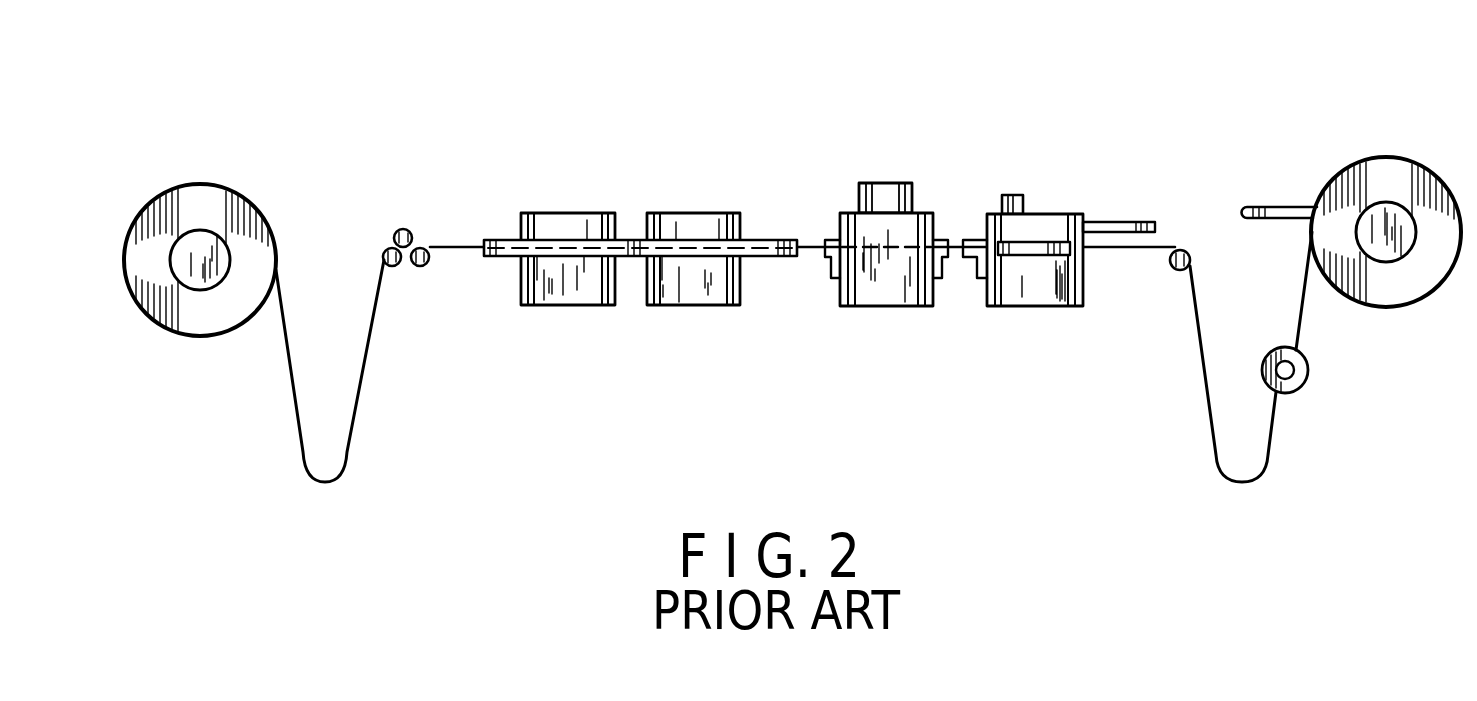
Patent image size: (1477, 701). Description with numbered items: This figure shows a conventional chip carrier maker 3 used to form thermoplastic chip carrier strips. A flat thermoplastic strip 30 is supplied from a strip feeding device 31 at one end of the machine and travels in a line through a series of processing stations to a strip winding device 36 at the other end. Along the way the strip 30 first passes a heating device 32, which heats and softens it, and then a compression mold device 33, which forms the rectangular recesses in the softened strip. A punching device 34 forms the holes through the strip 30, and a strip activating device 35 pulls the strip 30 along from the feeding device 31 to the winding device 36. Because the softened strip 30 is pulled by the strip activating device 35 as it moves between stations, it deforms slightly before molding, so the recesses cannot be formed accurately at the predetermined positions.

The chip carrier maker 3 is at (819, 168).
The flat thermoplastic strip 30 is at (279, 292).
The strip feeding device 31 is at (230, 160).
The heating device 32 is at (552, 213).
The compression mold device 33 is at (677, 213).
The punching device 34 is at (858, 187).
The strip activating device 35 is at (1047, 213).
The strip winding device 36 is at (1340, 167).